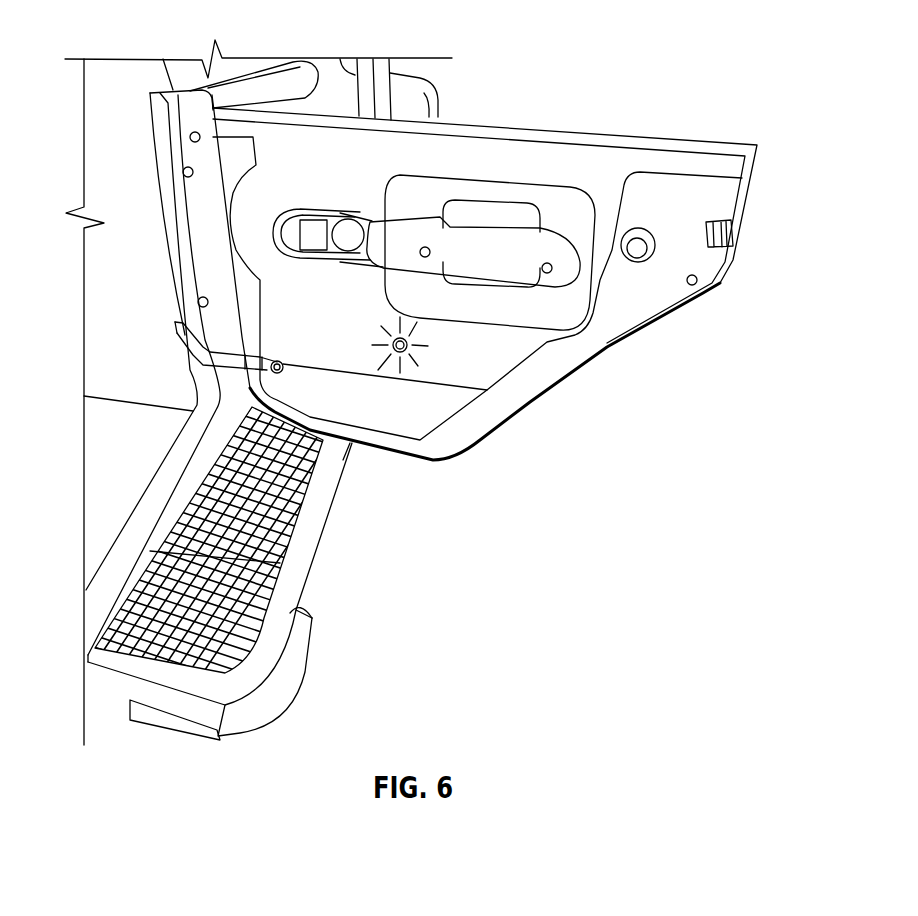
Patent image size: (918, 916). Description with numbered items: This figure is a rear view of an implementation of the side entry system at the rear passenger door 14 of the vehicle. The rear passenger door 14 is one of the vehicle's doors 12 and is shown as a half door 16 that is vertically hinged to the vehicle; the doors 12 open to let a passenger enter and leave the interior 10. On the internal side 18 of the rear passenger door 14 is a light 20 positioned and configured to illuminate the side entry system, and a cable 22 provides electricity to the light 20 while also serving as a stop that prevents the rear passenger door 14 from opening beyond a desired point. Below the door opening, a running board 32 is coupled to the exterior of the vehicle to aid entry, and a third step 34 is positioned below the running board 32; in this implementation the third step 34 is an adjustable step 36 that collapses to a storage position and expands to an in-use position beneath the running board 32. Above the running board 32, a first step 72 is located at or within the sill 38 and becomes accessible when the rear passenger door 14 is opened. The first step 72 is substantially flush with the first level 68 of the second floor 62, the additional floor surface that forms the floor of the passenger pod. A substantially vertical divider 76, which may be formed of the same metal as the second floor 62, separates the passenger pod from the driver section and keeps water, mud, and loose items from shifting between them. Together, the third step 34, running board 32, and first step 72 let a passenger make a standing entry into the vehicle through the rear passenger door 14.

The interior 10 is at (132, 457).
The door 12 is at (655, 320).
The rear passenger door 14 is at (603, 343).
The half door 16 is at (703, 290).
The internal side 18 is at (500, 358).
The light 20 is at (410, 347).
The cable 22 is at (250, 347).
The running board 32 is at (330, 505).
The third step 34 is at (318, 637).
The adjustable step 36 is at (303, 687).
The sill 38 is at (97, 570).
The second floor 62 is at (117, 486).
The first level 68 is at (153, 440).
The first step 72 is at (120, 540).
The substantially vertical divider 76 is at (95, 370).